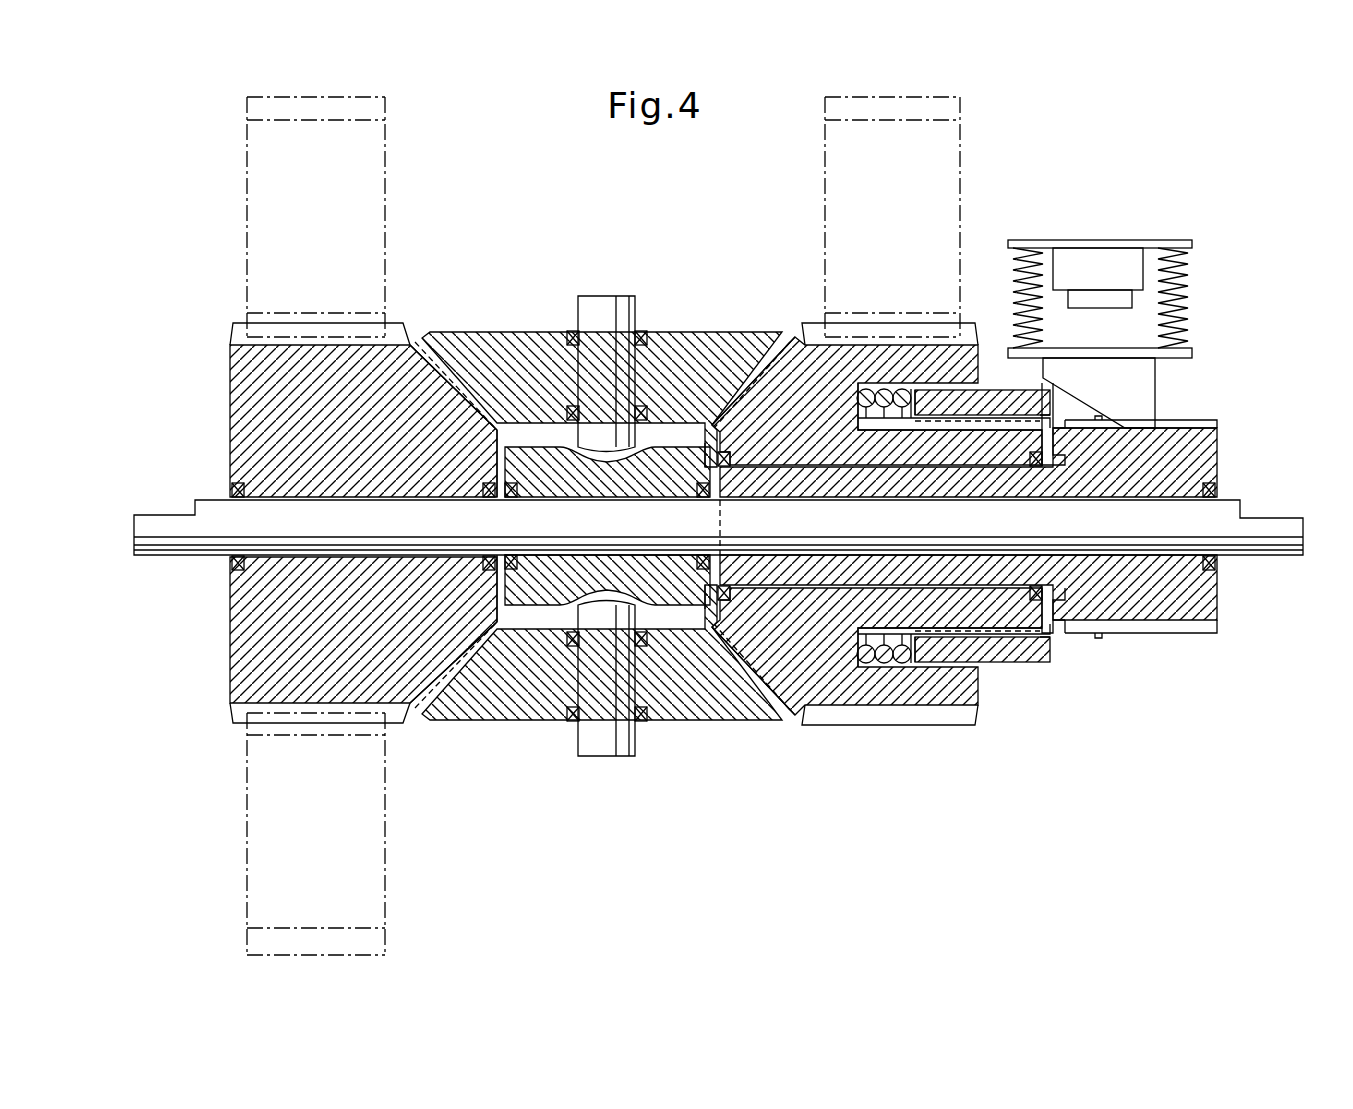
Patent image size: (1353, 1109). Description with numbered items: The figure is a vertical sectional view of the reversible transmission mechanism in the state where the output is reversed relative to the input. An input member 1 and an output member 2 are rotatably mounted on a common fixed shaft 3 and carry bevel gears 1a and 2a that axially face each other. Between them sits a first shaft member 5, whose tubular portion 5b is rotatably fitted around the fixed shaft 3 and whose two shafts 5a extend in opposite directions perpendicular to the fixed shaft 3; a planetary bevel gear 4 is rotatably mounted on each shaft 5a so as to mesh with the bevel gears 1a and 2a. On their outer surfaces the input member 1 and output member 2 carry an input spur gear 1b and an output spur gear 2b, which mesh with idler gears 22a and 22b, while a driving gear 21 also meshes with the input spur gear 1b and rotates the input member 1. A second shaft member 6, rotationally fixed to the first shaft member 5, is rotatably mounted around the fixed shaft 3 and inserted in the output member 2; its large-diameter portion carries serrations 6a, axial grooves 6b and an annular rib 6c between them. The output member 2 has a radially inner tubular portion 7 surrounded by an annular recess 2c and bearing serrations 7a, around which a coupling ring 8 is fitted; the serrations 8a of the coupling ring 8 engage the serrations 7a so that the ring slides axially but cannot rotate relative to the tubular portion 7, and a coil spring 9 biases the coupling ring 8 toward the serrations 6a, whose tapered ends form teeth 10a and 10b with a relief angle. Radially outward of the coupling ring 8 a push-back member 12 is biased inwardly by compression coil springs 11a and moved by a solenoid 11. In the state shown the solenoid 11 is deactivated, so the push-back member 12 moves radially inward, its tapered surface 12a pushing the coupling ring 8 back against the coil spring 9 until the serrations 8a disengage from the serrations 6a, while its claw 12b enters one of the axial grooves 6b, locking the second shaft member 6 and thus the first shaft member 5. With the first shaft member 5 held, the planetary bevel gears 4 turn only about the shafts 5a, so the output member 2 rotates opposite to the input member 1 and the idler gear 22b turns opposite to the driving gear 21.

The input member 1 is at (228, 655).
The bevel gear 1a is at (415, 338).
The input spur gear 1b is at (233, 328).
The output member 2 is at (972, 330).
The bevel gear 2a is at (790, 345).
The output spur gear 2b is at (812, 330).
The annular recess 2c is at (882, 655).
The fixed shaft 3 is at (225, 502).
The planetary bevel gear 4 is at (520, 355).
The first shaft member 5 is at (600, 292).
The shaft 5a is at (595, 730).
The tubular portion 5b is at (680, 590).
The second shaft member 6 is at (1220, 605).
The serrations 6a is at (1088, 635).
The axial grooves 6b is at (1170, 633).
The annular rib 6c is at (1100, 640).
The tubular portion 7 is at (915, 610).
The serrations 7a is at (895, 630).
The coupling ring 8 is at (988, 665).
The serrations 8a is at (945, 630).
The coil spring 9 is at (868, 652).
The teeth 10a is at (1050, 640).
The teeth 10b is at (1040, 662).
The solenoid 11 is at (1125, 262).
The compression coil springs 11a is at (1190, 295).
The push-back member 12 is at (1158, 392).
The tapered surface 12a is at (1070, 430).
The claw 12b is at (1165, 443).
The driving gear 21 is at (268, 880).
The idler gear 22a is at (268, 197).
The idler gear 22b is at (932, 165).